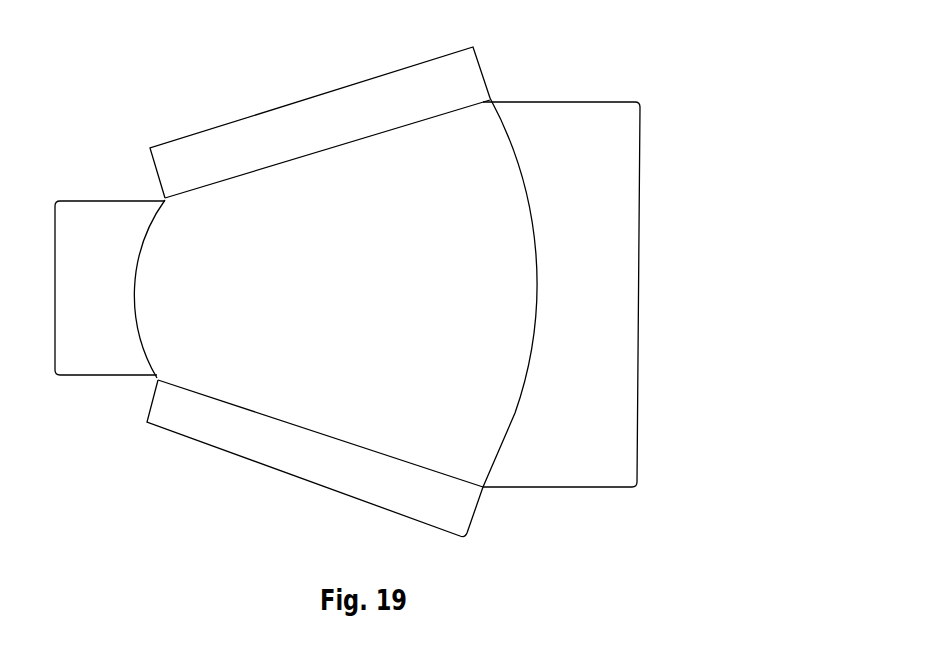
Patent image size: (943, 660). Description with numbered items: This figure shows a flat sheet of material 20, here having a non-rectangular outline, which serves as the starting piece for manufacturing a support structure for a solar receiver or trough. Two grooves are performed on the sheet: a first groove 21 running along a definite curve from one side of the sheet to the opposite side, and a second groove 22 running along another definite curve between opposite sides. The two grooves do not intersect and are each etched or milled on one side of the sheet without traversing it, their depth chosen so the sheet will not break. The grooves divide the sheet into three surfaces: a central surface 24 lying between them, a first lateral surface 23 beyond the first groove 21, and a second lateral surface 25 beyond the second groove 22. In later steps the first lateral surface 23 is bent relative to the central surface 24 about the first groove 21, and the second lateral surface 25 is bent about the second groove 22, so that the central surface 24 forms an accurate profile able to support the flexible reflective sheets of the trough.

The flat sheet of material 20 is at (214, 88).
The first groove 21 is at (515, 413).
The second groove 22 is at (150, 222).
The first lateral surface 23 is at (563, 167).
The central surface 24 is at (412, 220).
The second lateral surface 25 is at (100, 357).